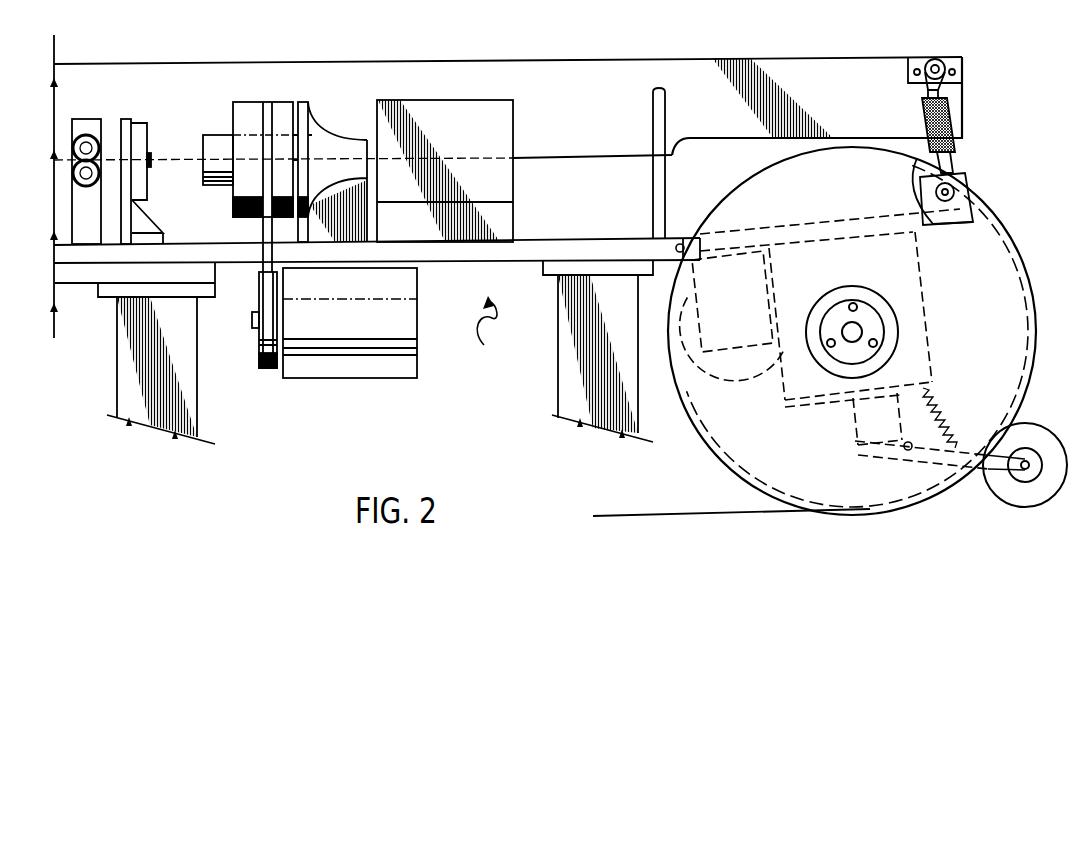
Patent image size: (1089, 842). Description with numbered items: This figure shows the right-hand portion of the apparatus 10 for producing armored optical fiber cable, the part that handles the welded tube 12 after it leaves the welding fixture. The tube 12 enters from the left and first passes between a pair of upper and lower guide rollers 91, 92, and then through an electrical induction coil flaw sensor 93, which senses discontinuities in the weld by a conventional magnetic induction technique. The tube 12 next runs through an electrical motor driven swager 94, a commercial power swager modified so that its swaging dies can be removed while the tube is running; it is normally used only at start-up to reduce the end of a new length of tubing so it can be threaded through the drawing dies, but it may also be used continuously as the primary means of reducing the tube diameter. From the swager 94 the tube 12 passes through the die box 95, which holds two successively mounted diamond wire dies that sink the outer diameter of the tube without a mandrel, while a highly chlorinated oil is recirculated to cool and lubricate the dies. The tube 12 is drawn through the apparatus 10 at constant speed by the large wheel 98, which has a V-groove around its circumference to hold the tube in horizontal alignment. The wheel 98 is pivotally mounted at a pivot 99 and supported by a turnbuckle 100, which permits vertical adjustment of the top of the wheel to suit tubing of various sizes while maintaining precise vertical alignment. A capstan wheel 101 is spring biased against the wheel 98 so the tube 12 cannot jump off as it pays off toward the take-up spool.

The apparatus 10 is at (494, 330).
The welded tube 12 is at (613, 158).
The upper guide roller 91 is at (73, 145).
The lower guide roller 92 is at (73, 178).
The electrical induction coil flaw sensor 93 is at (152, 160).
The electrical motor driven swager 94 is at (251, 104).
The die box 95 is at (428, 102).
The wheel 98 is at (1037, 304).
The pivot 99 is at (680, 244).
The turnbuckle 100 is at (953, 120).
The capstan wheel 101 is at (1025, 494).